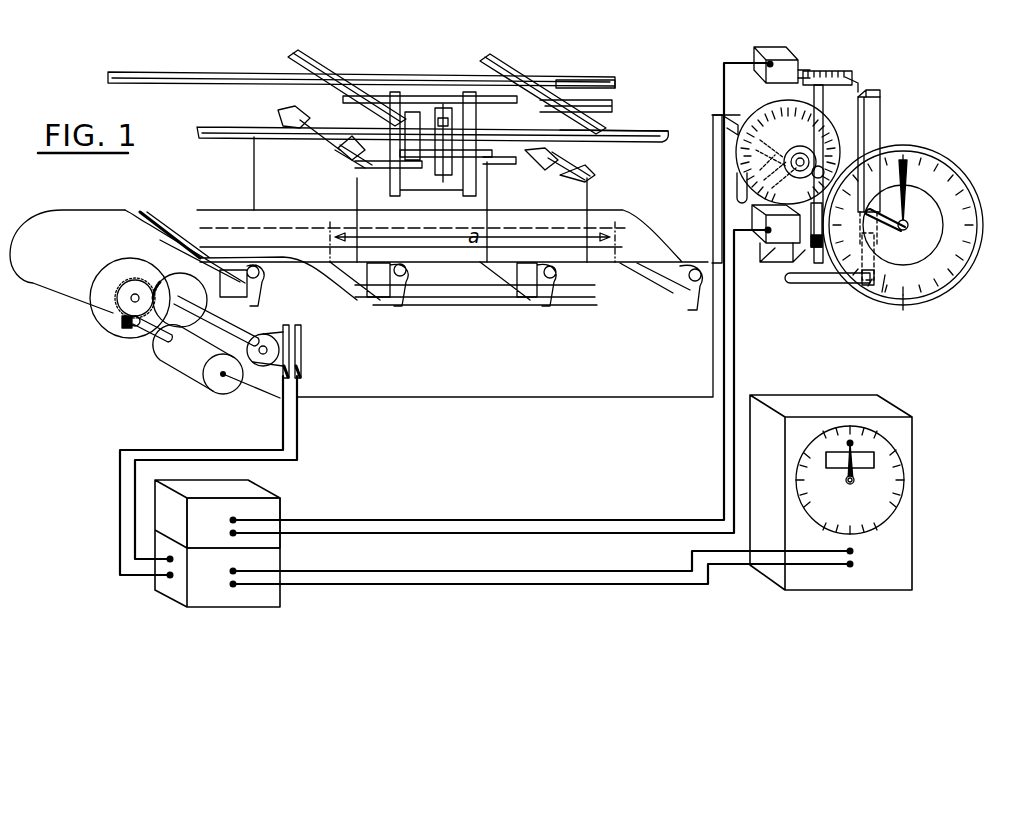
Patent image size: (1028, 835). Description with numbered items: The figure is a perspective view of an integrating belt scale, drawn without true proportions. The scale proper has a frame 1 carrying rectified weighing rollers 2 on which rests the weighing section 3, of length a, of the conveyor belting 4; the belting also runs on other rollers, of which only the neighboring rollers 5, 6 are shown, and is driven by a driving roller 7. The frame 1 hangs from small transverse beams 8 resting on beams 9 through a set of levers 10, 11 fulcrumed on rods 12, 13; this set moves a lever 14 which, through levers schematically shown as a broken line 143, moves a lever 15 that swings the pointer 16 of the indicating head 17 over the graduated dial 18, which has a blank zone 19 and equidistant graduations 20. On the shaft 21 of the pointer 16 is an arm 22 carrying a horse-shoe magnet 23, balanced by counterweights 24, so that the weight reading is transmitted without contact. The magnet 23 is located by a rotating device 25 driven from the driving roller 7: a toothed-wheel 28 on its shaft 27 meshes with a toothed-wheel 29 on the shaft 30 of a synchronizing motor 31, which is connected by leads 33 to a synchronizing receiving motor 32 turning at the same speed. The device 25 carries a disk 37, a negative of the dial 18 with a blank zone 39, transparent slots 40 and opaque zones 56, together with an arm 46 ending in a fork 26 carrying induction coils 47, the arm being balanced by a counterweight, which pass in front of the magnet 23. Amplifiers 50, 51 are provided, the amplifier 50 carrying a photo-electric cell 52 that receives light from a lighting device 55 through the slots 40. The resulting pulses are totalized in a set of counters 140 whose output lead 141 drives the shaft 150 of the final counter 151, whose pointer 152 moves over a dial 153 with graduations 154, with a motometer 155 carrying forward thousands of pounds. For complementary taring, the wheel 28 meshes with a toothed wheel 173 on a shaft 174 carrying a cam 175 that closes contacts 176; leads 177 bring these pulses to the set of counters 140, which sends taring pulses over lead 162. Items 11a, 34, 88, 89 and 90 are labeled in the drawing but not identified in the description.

The frame 1 is at (461, 325).
The weighing rollers 2 is at (395, 290).
The weighing section 3 is at (198, 232).
The conveyor belting 4 is at (82, 214).
The neighboring roller 5 is at (232, 264).
The neighboring roller 6 is at (672, 292).
The driving roller 7 is at (110, 308).
The small transverse beams 8 is at (300, 70).
The beams 9 is at (178, 78).
The lever 10 is at (306, 118).
The lever 11 is at (392, 110).
The shaft 11a is at (470, 158).
The rod 12 is at (350, 163).
The rod 13 is at (440, 115).
The lever 14 is at (604, 106).
The lever 15 is at (810, 284).
The pointer 16 is at (910, 195).
The indicating head 17 is at (906, 148).
The graduated dial 18 is at (930, 268).
The blank zone 19 is at (903, 298).
The graduations 20 is at (882, 292).
The shaft 21 is at (918, 222).
The arm 22 is at (875, 118).
The horse-shoe magnet 23 is at (873, 92).
The counterweights 24 is at (858, 285).
The rotating device 25 is at (767, 97).
The fork 26 is at (850, 80).
The shaft 27 is at (131, 298).
The toothed-wheel 28 is at (125, 322).
The toothed-wheel 29 is at (133, 326).
The shaft 30 is at (155, 338).
The synchronizing motor 31 is at (196, 362).
The synchronizing receiving motor 32 is at (726, 120).
The leads 33 is at (508, 400).
The cone 34 is at (742, 146).
The disk 37 is at (760, 132).
The blank zone 39 is at (784, 48).
The slots or transparent zones 40 is at (745, 178).
The arm 46 is at (824, 110).
The induction coils 47 is at (833, 57).
The amplifier 50 is at (780, 262).
The amplifier 51 is at (804, 70).
The photo-electric cell 52 is at (755, 212).
The lighting device 55 is at (735, 193).
The photon-opaque zones 56 is at (742, 156).
The wire 88 is at (465, 518).
The control unit 89 is at (258, 506).
The wire 90 is at (545, 530).
The set of counters 140 is at (248, 596).
The lead 141 is at (462, 573).
The transmission levers 143 is at (656, 150).
The shaft 150 is at (858, 484).
The final counter 151 is at (872, 479).
The pointer 152 is at (860, 474).
The graduated dial 153 is at (896, 528).
The graduations 154 is at (870, 527).
The motometer 155 is at (838, 448).
The lead 162 is at (530, 586).
The toothed wheel 173 is at (176, 312).
The shaft 174 is at (230, 318).
The cam 175 is at (262, 368).
The contacts 176 is at (301, 340).
The leads 177 is at (170, 460).